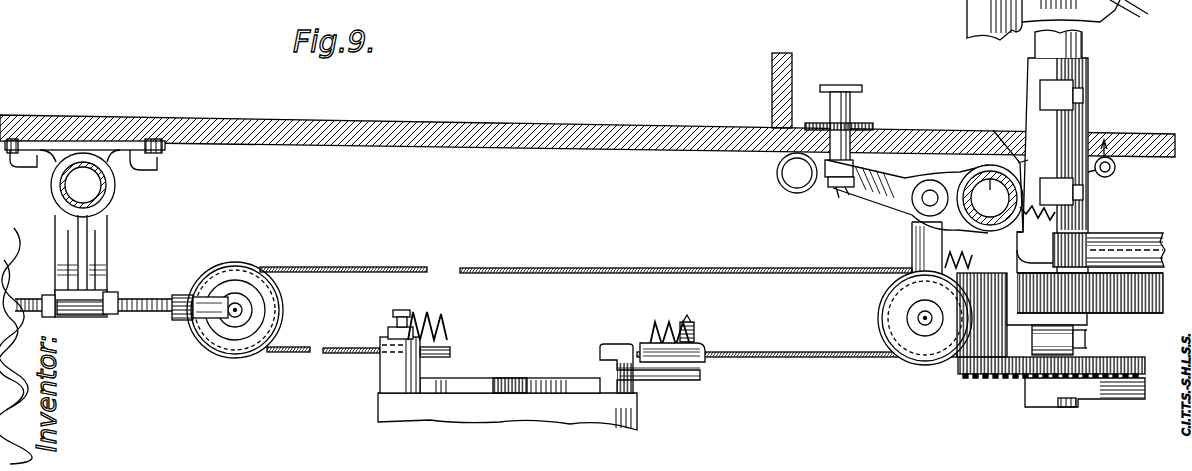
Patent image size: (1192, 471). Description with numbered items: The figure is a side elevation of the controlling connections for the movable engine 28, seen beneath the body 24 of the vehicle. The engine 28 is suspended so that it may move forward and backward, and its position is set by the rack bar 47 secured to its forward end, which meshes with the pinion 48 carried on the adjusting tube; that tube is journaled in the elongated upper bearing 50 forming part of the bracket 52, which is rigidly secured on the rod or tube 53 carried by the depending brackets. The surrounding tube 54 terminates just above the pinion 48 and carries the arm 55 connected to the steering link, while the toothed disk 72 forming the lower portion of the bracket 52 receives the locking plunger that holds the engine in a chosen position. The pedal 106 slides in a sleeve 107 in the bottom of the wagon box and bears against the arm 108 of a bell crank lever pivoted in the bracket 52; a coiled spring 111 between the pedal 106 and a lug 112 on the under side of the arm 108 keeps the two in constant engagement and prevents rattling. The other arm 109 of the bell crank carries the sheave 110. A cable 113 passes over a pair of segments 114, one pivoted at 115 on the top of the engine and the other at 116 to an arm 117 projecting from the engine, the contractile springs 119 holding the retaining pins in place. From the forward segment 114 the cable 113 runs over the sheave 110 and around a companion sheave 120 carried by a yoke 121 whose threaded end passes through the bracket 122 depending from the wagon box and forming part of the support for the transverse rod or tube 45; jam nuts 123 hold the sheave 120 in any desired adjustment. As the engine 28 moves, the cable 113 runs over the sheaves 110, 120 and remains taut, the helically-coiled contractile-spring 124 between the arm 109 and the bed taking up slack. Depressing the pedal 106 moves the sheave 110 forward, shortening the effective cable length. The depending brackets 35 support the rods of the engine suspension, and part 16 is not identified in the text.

The body 24 is at (512, 115).
The rod or tube 45 is at (62, 178).
The bracket 122 is at (100, 242).
The jam nuts 123 is at (100, 333).
The yoke 121 is at (177, 297).
The companion sheave 120 is at (281, 312).
The cable 113 is at (340, 353).
The engine 28 is at (493, 410).
The pivot 115 is at (403, 311).
The contractile springs 119 is at (425, 323).
The segments 114 is at (445, 348).
The pivot 116 is at (688, 320).
The arm 117 is at (665, 378).
The pedal 106 is at (836, 94).
The sleeve 107 is at (851, 128).
The coiled spring 111 is at (801, 196).
The lug 112 is at (840, 202).
The arm 108 is at (898, 186).
The helically-coiled contractile-spring 124 is at (920, 208).
The rod or tube 53 is at (990, 198).
The arm 109 is at (913, 254).
The sheave 110 is at (886, 311).
The elongated upper bearing 50 is at (1086, 73).
The tube 54 is at (1076, 51).
The bracket 52 is at (1018, 163).
The rack bar 47 is at (1155, 336).
The pinion 48 is at (1060, 292).
The toothed disk 72 is at (983, 362).
The arm 55 is at (1115, 233).
The depending brackets 35 is at (963, 20).
The frame part 16 is at (1085, 11).